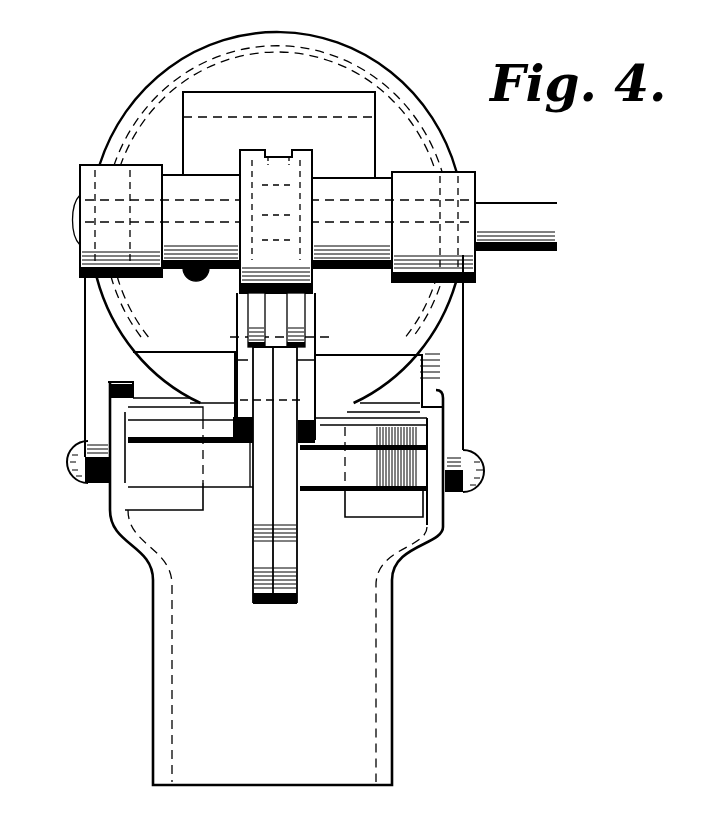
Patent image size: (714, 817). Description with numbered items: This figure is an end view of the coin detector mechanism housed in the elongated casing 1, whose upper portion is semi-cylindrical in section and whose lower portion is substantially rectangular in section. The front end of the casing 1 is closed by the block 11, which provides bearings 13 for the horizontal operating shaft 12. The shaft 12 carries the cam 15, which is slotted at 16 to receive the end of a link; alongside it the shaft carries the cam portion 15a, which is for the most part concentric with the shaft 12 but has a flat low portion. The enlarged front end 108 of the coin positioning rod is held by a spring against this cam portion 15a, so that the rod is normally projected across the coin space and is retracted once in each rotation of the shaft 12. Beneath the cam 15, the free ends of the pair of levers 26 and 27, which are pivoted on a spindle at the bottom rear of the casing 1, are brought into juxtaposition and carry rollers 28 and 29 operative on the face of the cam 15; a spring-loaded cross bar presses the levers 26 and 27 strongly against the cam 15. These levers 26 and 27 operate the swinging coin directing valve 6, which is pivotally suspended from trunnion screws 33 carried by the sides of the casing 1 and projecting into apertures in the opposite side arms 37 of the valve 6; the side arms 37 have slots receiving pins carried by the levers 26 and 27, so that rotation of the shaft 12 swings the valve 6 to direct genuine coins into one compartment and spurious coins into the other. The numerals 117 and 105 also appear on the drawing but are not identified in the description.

The casing 1 is at (455, 348).
The swinging valve 6 is at (387, 668).
The block 11 is at (310, 73).
The operating shaft 12 is at (513, 213).
The bearings 13 is at (98, 280).
The cam 15 is at (257, 158).
The cam portion 15a is at (197, 187).
The slot 16 is at (281, 151).
The lever 26 is at (317, 478).
The lever 27 is at (222, 478).
The roller 28 is at (298, 318).
The roller 29 is at (257, 308).
The trunnion screws 33 is at (80, 453).
The side arms 37 is at (115, 458).
The enlarged front end of rod 108 is at (185, 279).
The element 117 is at (207, 813).
The element 105 is at (225, 813).